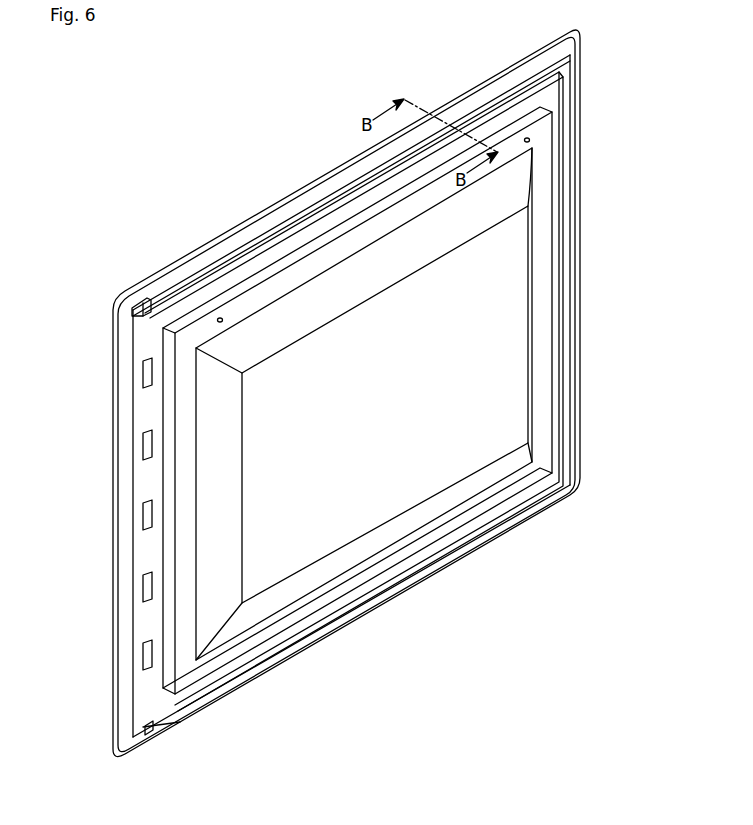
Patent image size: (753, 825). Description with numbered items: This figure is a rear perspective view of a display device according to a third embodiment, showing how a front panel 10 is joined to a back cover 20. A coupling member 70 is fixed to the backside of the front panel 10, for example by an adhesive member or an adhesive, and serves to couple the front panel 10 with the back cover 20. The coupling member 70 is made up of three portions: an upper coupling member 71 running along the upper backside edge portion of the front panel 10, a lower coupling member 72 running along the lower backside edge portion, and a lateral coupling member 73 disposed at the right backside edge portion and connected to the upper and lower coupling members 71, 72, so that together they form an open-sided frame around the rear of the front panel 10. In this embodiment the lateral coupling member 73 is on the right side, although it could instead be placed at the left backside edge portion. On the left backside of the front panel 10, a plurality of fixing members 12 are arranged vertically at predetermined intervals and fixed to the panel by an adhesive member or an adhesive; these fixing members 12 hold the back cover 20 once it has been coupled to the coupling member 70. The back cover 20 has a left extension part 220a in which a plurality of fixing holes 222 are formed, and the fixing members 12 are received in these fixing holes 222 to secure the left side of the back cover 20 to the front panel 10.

The front panel 10 is at (233, 228).
The fixing members 12 is at (148, 397).
The back cover 20 is at (536, 288).
The coupling member 70 is at (578, 238).
The upper coupling member 71 is at (318, 205).
The lower coupling member 72 is at (333, 620).
The lateral coupling member 73 is at (573, 203).
The left extension part 220a is at (145, 556).
The fixing holes 222 is at (145, 377).